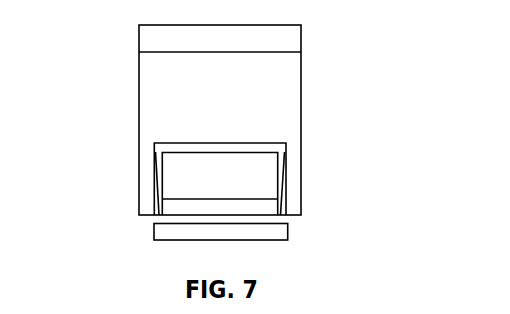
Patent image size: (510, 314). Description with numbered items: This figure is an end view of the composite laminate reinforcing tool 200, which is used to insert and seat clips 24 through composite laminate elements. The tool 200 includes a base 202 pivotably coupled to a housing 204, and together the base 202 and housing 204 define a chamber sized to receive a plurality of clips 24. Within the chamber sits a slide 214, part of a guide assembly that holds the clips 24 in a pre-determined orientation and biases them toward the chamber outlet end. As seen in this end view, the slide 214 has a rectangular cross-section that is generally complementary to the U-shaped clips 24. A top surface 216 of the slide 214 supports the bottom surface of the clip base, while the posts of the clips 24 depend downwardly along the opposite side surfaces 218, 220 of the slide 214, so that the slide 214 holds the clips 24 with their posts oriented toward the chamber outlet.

The composite laminate reinforcing tool 200 is at (390, 94).
The housing 204 is at (147, 64).
The clip 24 is at (182, 142).
The top surface 216 is at (249, 151).
The slide 214 is at (263, 177).
The side surface 218 is at (162, 179).
The side surface 220 is at (280, 190).
The base 202 is at (195, 240).